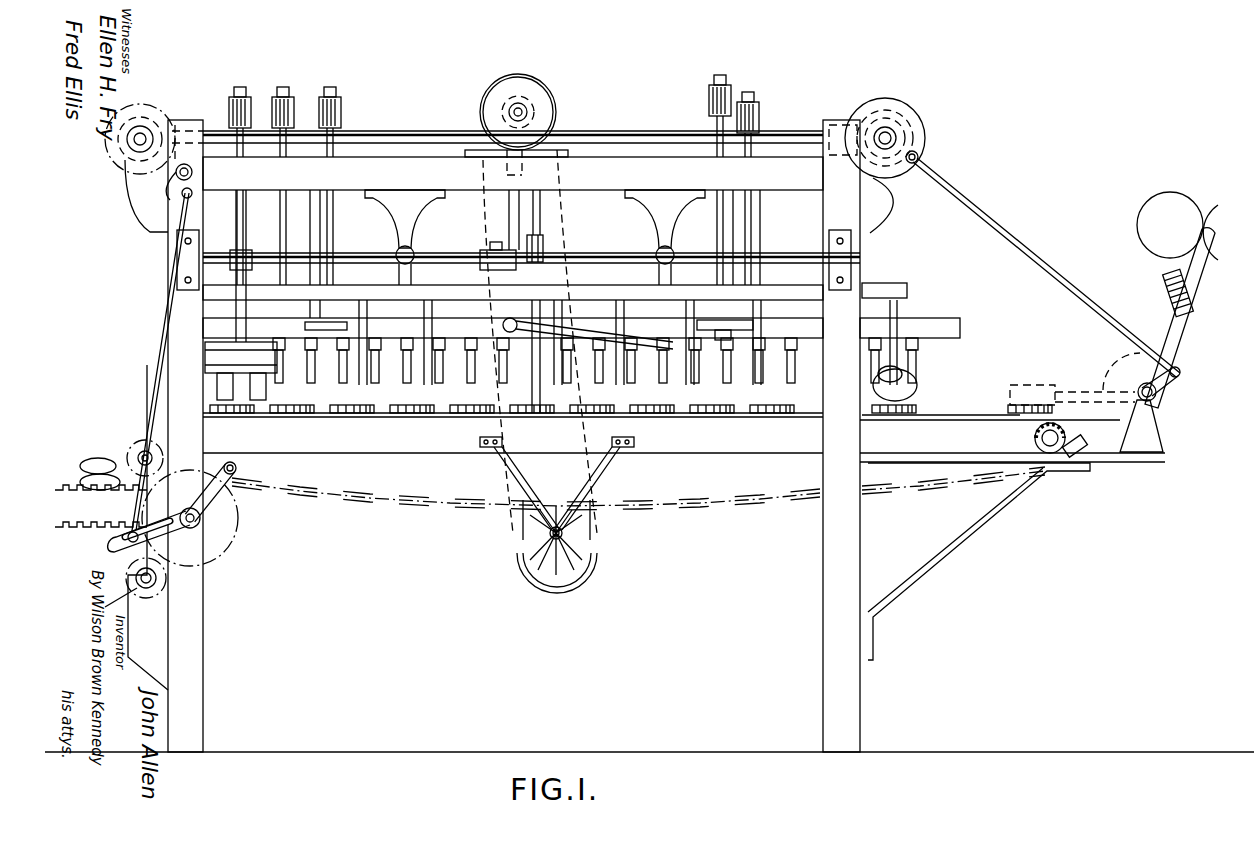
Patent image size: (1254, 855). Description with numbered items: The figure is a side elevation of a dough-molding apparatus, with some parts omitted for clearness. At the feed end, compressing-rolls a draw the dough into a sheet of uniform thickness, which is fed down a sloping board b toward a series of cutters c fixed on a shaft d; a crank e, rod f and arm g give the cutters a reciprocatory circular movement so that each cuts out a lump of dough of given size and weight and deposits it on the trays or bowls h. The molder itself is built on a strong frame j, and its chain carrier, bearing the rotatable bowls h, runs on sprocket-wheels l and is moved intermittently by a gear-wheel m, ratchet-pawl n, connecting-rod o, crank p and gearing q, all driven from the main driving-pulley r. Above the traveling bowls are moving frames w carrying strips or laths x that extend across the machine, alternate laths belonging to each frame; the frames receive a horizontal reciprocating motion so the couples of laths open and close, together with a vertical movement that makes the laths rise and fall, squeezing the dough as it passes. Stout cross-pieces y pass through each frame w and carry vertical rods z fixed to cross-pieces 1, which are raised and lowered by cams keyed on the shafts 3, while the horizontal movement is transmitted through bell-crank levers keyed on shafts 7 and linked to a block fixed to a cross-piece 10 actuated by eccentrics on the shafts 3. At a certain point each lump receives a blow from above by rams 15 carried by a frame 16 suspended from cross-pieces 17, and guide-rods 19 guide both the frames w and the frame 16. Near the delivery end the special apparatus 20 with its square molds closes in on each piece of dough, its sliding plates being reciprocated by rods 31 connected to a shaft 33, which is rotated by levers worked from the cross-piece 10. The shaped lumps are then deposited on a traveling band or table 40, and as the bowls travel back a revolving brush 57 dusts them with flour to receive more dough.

The cross-pieces 1 is at (340, 100).
The shafts 3 is at (657, 132).
The shafts 7 is at (412, 252).
The cross-piece 10 is at (528, 240).
The rams 15 is at (365, 385).
The frame 16 is at (868, 290).
The cross-pieces 17 is at (758, 110).
The guide-rods 19 is at (313, 212).
The special apparatus 20 is at (260, 350).
The rods 31 is at (240, 312).
The shaft 33 is at (135, 142).
The traveling band or table 40 is at (486, 463).
The revolving brush 57 is at (592, 560).
The compressing-rolls a is at (1190, 212).
The sloping board b is at (1200, 302).
The cutters c is at (1168, 285).
The shaft d is at (1160, 410).
The crank e is at (918, 152).
The rod f is at (1052, 278).
The arm g is at (1182, 375).
The trays or bowls h is at (352, 416).
The frame j is at (609, 436).
The sprocket-wheels l is at (1068, 440).
The gear-wheel m is at (173, 515).
The ratchet-pawl n is at (236, 468).
The connecting-rod o is at (166, 326).
The crank p is at (178, 180).
The gearing q is at (168, 122).
The main driving-pulley r is at (548, 106).
The moving frames w is at (581, 324).
The strips or laths x is at (670, 375).
The cross-pieces y is at (342, 334).
The vertical rods z is at (331, 222).